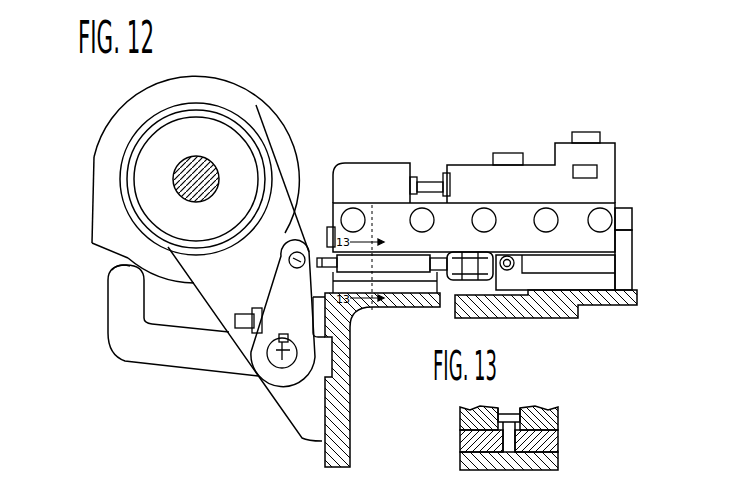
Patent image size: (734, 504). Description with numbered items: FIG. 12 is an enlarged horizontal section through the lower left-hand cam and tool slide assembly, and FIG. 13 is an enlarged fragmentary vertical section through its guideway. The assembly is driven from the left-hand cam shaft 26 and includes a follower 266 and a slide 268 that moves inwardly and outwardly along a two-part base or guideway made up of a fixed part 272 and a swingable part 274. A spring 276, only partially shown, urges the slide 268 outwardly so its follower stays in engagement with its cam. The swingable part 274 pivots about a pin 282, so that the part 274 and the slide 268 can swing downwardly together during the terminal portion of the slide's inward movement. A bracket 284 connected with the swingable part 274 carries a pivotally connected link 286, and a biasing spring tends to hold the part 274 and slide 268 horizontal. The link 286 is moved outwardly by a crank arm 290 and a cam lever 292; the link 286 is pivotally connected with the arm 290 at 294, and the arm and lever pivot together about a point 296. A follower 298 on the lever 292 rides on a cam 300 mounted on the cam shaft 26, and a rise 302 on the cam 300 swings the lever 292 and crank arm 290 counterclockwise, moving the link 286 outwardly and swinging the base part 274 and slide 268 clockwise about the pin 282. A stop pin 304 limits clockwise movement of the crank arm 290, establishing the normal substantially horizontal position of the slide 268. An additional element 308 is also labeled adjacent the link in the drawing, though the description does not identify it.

In FIG. 12, the left-hand cam shaft 26 is at (233, 158).
In FIG. 12, the cam 300 is at (106, 167).
In FIG. 12, the rise 302 is at (95, 236).
In FIG. 12, the follower 298 is at (112, 268).
In FIG. 12, the cam lever 292 is at (147, 358).
In FIG. 12, the crank arm 290 is at (281, 278).
In FIG. 12, the pivotal connection 294 is at (292, 251).
In FIG. 12, the pivot point 296 is at (281, 365).
In FIG. 12, the stop pin 304 is at (351, 338).
In FIG. 12, the rod 308 is at (388, 268).
In FIG. 12, the link 286 is at (440, 306).
In FIG. 12, the bracket 284 is at (485, 248).
In FIG. 12, the swingable base or guideway part 274 is at (617, 266).
In FIG. 13, the swingable base or guideway part 274 is at (556, 450).
In FIG. 12, the fixed base or guideway part 272 is at (632, 283).
In FIG. 13, the fixed base or guideway part 272 is at (556, 462).
In FIG. 12, the spring 276 is at (617, 218).
In FIG. 12, the slide 268 is at (462, 178).
In FIG. 13, the slide 268 is at (558, 430).
In FIG. 12, the follower 266 is at (353, 162).
In FIG. 13, the pin 282 is at (510, 407).